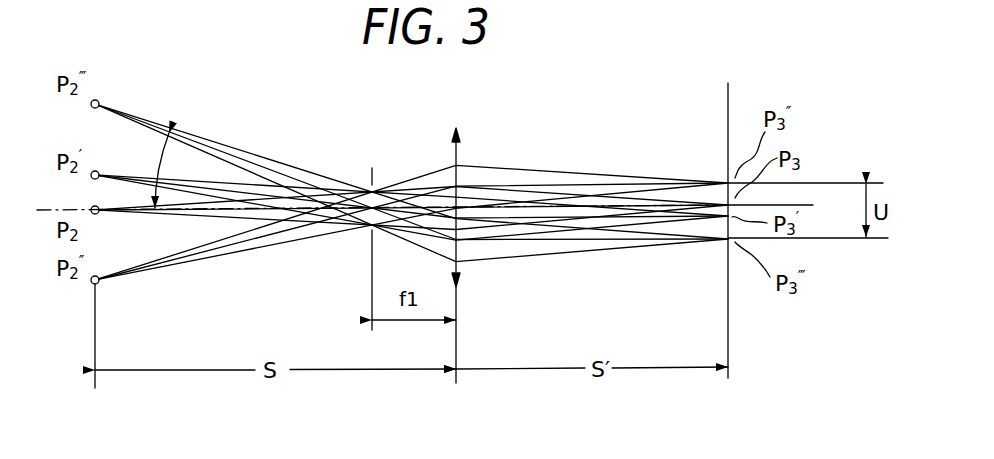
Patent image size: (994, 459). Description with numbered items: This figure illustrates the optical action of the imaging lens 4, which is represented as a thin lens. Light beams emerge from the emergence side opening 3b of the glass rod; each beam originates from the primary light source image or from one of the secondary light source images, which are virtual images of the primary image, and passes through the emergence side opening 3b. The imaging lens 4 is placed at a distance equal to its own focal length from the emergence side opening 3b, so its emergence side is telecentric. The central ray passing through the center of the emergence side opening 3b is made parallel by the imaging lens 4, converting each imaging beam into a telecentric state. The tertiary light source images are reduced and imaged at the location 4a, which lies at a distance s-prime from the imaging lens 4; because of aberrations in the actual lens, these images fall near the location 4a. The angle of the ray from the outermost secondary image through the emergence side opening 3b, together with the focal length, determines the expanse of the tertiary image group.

The emergence side opening 3b is at (373, 191).
The imaging lens 4 is at (565, 133).
The location of tertiary light source images 4a is at (727, 118).